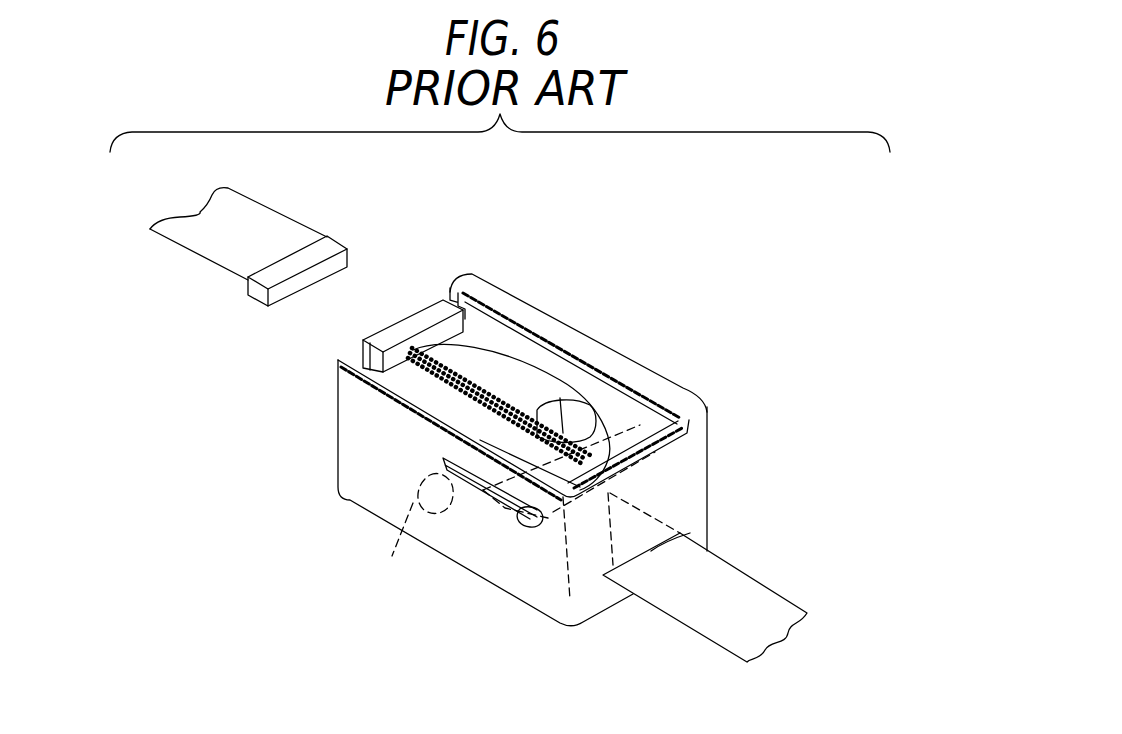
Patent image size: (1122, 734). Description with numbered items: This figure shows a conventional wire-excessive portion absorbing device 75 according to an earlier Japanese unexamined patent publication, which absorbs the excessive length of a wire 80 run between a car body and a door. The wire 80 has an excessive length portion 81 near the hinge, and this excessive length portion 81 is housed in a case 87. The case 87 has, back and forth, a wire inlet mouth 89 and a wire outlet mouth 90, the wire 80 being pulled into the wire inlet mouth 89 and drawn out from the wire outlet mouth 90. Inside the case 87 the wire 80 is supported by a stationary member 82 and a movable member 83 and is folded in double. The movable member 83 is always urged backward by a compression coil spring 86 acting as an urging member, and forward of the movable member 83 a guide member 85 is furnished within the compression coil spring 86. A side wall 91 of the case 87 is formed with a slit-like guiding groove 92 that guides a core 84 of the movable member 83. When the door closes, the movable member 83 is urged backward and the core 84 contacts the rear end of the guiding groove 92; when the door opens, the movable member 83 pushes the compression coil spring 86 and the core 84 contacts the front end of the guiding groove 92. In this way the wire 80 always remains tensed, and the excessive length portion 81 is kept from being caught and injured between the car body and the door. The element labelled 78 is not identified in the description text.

The wire-excessive portion absorbing device 75 is at (660, 352).
The hidden contact portion 78 is at (614, 566).
The wire 80 is at (206, 245).
The excessive length portion 81 is at (520, 362).
The stationary member 82 is at (430, 495).
The movable member 83 is at (567, 600).
The core 84 is at (520, 506).
The guide member 85 is at (470, 327).
The compression coil spring 86 is at (542, 402).
The case 87 is at (709, 437).
The wire inlet mouth 89 is at (452, 290).
The wire outlet mouth 90 is at (690, 536).
The side wall 91 is at (363, 480).
The guiding groove 92 is at (493, 500).